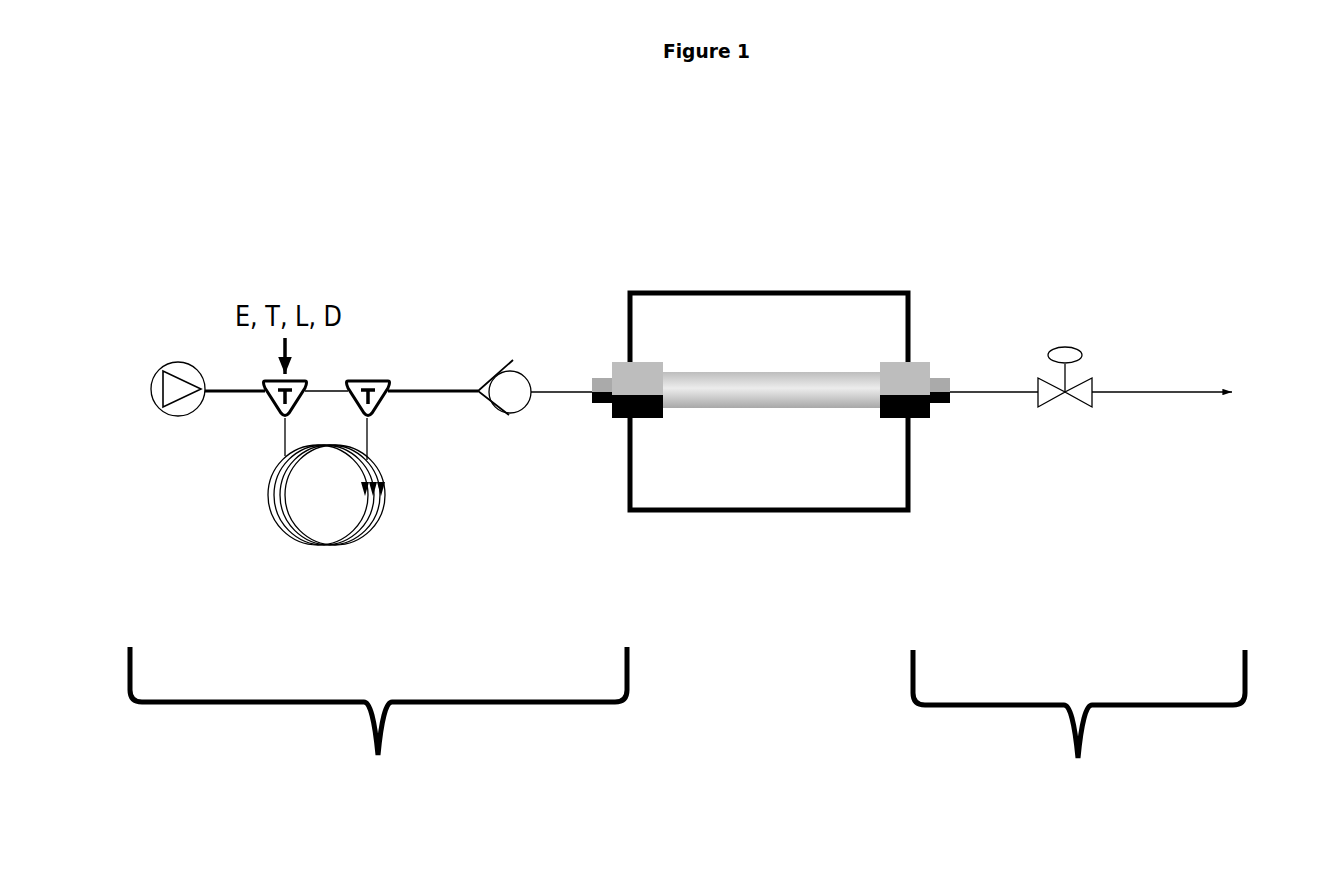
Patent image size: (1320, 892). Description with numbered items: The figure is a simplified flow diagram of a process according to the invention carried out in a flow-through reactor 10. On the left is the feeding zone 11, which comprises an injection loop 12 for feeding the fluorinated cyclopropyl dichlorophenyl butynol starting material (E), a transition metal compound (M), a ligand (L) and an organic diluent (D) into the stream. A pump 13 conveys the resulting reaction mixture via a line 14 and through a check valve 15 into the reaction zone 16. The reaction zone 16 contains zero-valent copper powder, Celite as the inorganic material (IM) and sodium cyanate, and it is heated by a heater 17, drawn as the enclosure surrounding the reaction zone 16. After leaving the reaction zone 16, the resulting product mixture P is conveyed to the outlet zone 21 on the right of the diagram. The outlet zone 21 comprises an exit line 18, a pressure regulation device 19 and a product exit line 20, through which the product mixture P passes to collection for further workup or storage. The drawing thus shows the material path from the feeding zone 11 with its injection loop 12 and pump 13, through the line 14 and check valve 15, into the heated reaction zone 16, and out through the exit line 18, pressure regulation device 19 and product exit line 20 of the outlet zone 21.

The flow-through reactor 10 is at (430, 176).
The feeding zone 11 is at (378, 724).
The injection loop 12 is at (167, 422).
The pump 13 is at (306, 563).
The line 14 is at (437, 386).
The check valve 15 is at (485, 412).
The reaction zone 16 is at (765, 350).
The heater 17 is at (848, 286).
The exit line 18 is at (1002, 388).
The pressure regulation device 19 is at (1079, 328).
The product exit line 20 is at (1192, 385).
The outlet zone 21 is at (1079, 728).